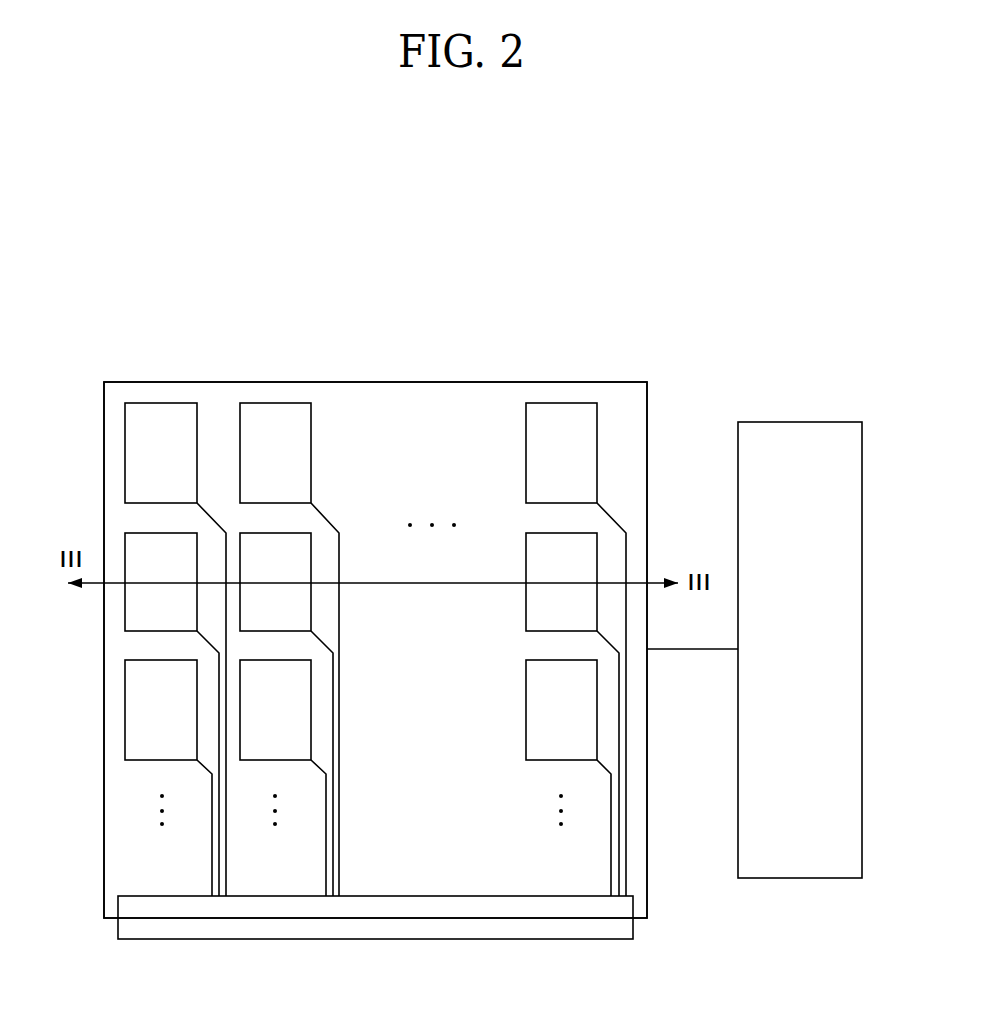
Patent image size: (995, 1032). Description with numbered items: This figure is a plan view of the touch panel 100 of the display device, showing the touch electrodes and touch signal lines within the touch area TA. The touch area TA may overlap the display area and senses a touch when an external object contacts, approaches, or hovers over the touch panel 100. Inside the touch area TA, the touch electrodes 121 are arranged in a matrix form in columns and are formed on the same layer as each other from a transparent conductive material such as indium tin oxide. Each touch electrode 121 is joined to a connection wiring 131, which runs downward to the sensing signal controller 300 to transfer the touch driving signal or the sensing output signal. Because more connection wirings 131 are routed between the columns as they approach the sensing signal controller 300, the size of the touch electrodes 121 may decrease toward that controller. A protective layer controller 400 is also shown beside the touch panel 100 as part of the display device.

The touch panel 100 is at (679, 329).
The touch area TA is at (647, 428).
The touch electrode 121 is at (159, 422).
The connection wiring 131 is at (335, 520).
The sensing signal controller 300 is at (528, 940).
The protective layer controller 400 is at (798, 422).